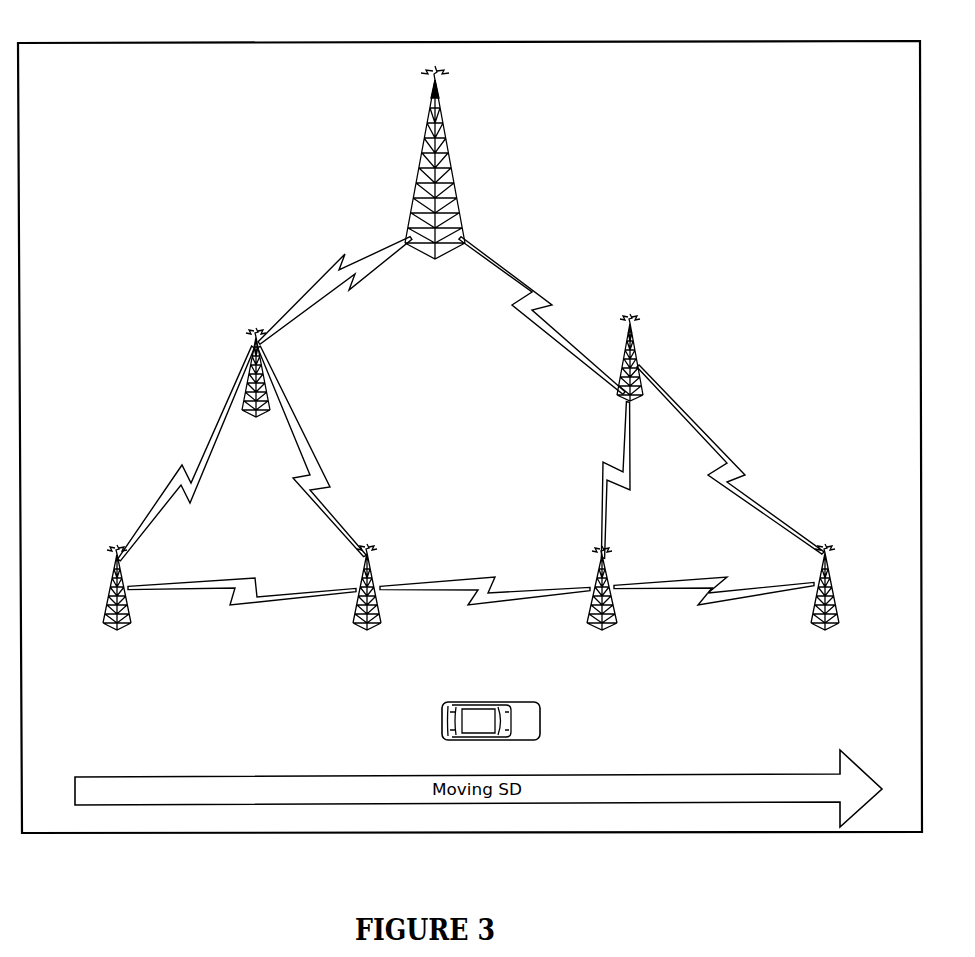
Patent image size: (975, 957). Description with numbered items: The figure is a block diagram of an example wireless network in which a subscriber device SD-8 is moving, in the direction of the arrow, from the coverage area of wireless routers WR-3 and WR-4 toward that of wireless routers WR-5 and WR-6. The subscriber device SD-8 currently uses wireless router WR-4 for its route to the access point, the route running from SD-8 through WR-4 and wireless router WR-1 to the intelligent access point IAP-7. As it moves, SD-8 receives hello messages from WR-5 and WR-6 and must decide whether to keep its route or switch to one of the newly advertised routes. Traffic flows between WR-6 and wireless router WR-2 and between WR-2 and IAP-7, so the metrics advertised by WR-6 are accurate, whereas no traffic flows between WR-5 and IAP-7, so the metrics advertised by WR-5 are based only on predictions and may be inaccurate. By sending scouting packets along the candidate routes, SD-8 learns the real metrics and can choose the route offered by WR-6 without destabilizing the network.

The intelligent access point IAP- 7 is at (435, 174).
The wireless router WR- 1 is at (256, 383).
The wireless router WR- 2 is at (629, 370).
The wireless router WR- 3 is at (115, 600).
The wireless router WR- 4 is at (367, 600).
The wireless router WR- 5 is at (603, 601).
The wireless router WR- 6 is at (825, 600).
The subscriber device SD- 8 is at (491, 734).